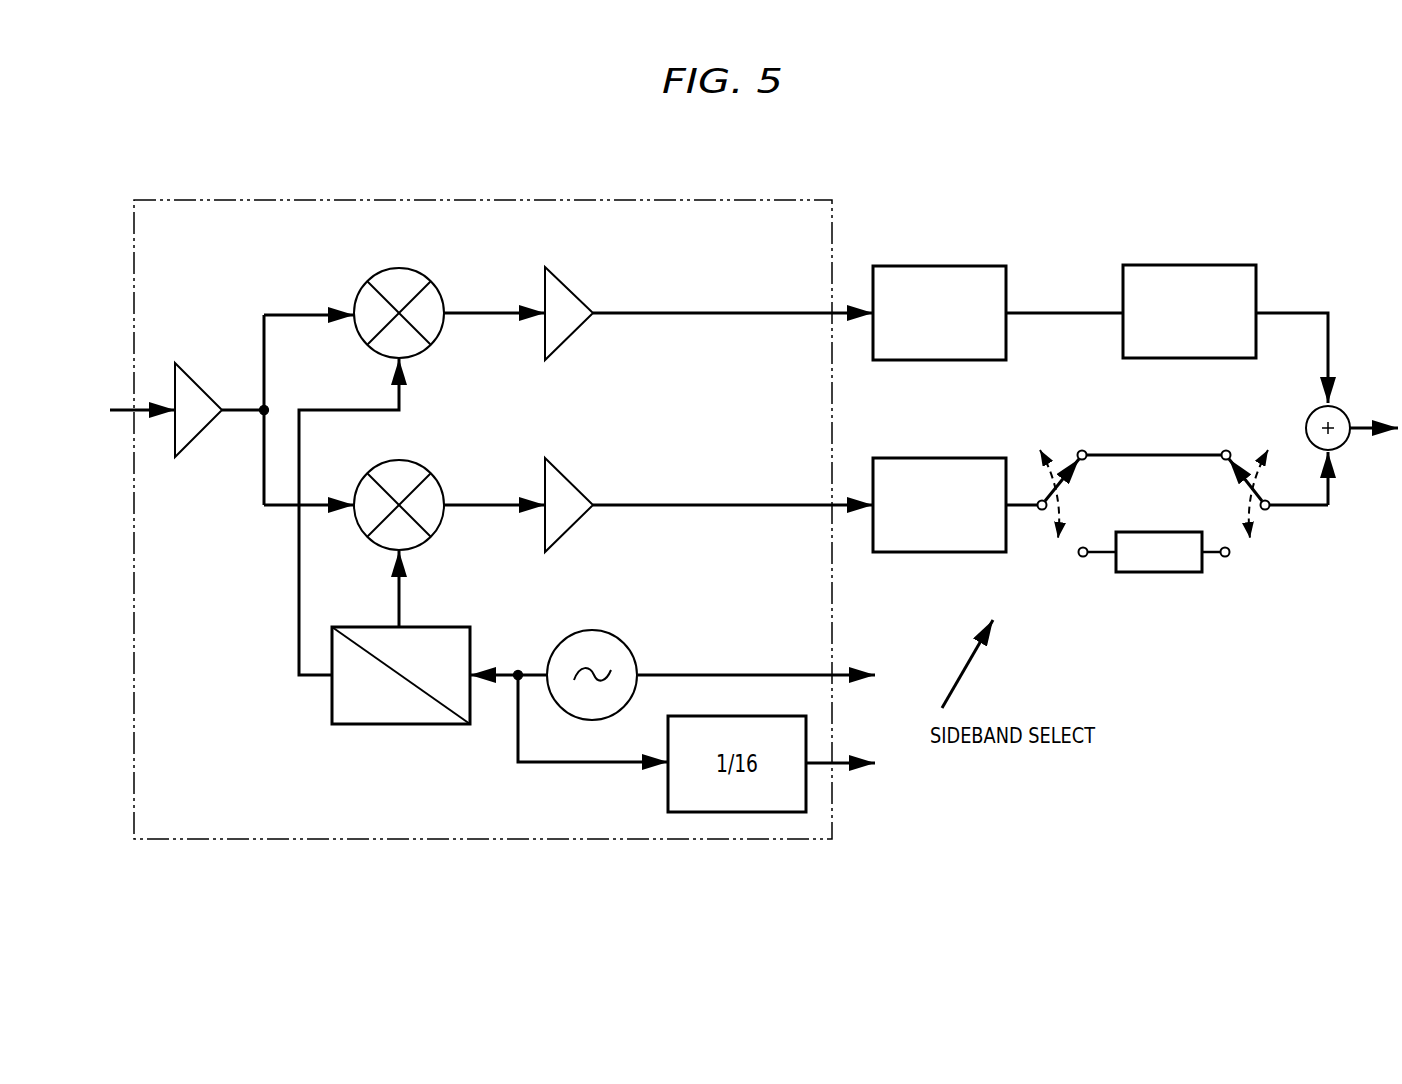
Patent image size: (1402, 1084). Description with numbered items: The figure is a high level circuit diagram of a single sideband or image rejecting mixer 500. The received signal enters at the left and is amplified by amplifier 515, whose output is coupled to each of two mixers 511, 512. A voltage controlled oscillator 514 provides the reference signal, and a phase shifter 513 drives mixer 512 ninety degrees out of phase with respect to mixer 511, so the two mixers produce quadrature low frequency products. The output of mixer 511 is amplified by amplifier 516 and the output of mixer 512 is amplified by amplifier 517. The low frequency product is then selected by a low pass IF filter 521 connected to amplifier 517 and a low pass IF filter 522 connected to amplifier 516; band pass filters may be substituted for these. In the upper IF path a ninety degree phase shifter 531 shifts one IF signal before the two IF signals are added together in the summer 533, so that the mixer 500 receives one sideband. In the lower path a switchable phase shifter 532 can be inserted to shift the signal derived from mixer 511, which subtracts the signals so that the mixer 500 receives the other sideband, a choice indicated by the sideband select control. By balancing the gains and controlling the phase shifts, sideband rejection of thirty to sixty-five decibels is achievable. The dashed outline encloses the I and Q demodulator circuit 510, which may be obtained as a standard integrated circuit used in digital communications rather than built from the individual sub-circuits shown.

The single sideband or image rejecting mixer 500 is at (738, 165).
The I and Q demodulator circuit 510 is at (298, 200).
The mixer 511 is at (438, 478).
The mixer 512 is at (357, 291).
The phase shifter 513 is at (430, 627).
The voltage controlled oscillator (VCO) 514 is at (592, 630).
The amplifier 515 is at (194, 380).
The amplifier 516 is at (568, 479).
The amplifier 517 is at (566, 287).
The low pass IF filter 521 is at (940, 266).
The low pass IF filter 522 is at (940, 458).
The 90 degree phase shifter 531 is at (1216, 265).
The phase shifter 532 is at (1157, 573).
The summer 533 is at (1345, 412).